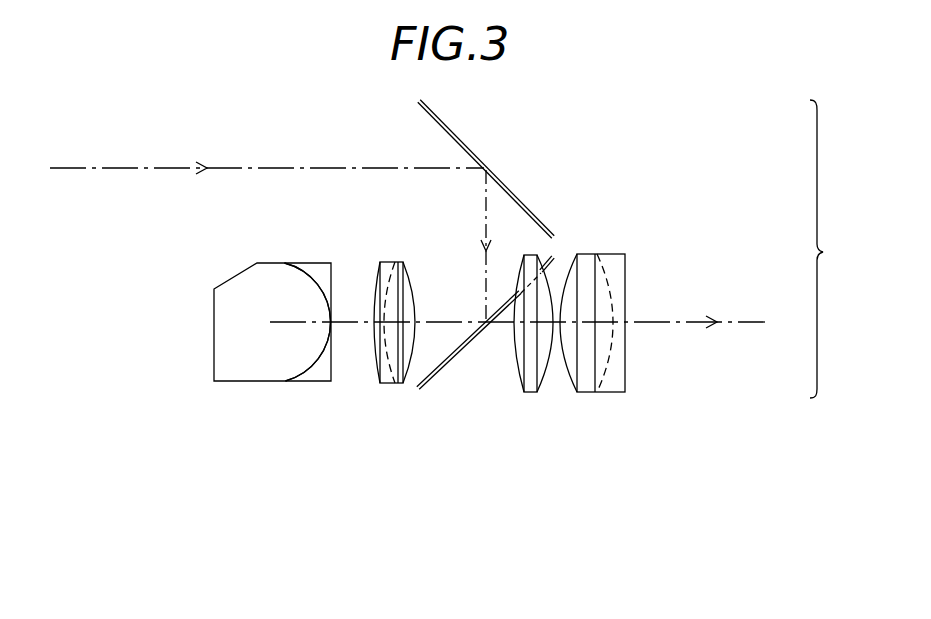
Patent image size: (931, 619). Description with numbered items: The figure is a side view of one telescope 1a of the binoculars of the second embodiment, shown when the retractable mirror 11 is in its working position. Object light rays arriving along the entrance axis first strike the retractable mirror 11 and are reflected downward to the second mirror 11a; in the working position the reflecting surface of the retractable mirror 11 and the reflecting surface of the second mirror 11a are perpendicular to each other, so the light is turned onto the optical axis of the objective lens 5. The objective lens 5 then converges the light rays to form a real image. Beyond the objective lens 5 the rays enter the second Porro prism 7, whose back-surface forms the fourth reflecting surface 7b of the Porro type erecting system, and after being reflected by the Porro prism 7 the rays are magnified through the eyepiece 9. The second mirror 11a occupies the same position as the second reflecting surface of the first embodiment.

The telescope 1a is at (832, 249).
The objective lens 5 is at (381, 390).
The second Porro prism 7 is at (307, 387).
The fourth reflecting surface 7b is at (242, 381).
The eyepiece 9 is at (636, 373).
The retractable mirror 11 is at (447, 129).
The second mirror 11a is at (450, 368).